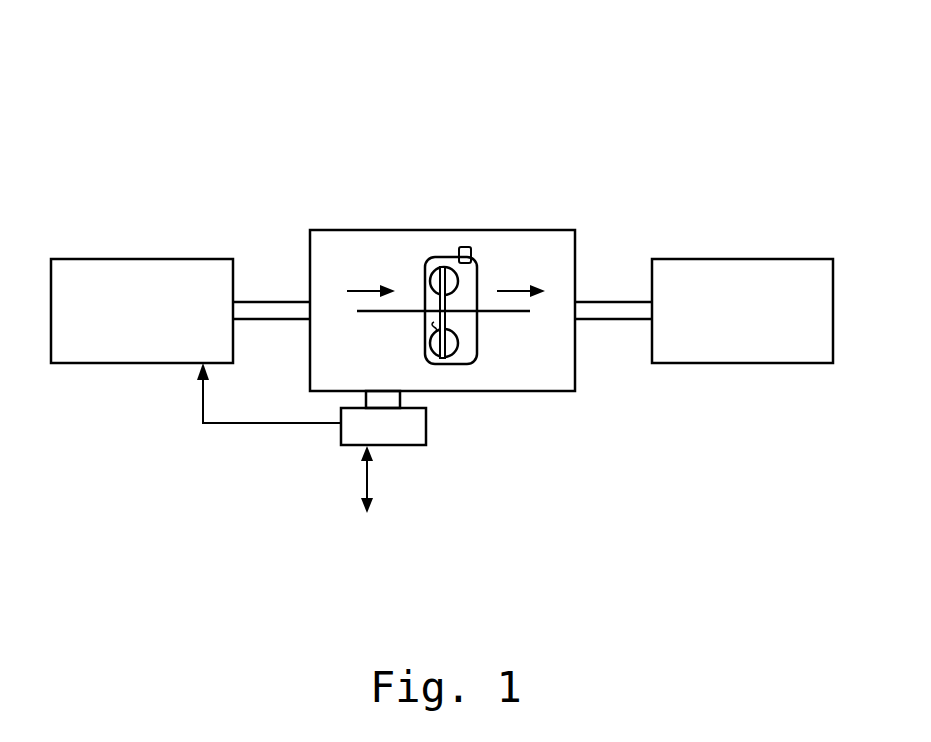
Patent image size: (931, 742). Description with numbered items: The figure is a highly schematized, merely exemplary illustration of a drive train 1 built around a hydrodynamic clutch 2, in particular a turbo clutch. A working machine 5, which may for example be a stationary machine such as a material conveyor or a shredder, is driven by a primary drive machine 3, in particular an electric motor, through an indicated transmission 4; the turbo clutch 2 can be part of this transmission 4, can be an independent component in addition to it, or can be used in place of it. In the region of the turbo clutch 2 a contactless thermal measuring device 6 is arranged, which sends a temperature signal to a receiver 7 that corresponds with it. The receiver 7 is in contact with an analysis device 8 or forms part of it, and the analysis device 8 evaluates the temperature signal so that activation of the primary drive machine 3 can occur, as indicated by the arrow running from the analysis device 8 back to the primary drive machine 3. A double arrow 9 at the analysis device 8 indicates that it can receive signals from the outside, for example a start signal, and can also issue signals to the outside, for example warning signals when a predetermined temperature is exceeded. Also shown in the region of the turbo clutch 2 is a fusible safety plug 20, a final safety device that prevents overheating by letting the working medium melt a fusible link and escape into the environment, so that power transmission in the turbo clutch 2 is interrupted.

The drive train 1 is at (483, 130).
The hydrodynamic clutch 2 is at (448, 297).
The primary drive machine 3 is at (152, 259).
The transmission 4 is at (373, 230).
The working machine 5 is at (742, 259).
The contactless thermal measuring device 6 is at (437, 328).
The receiver 7 is at (400, 401).
The analysis device 8 is at (405, 445).
The double arrow 9 is at (365, 477).
The fusible safety plug 20 is at (462, 247).